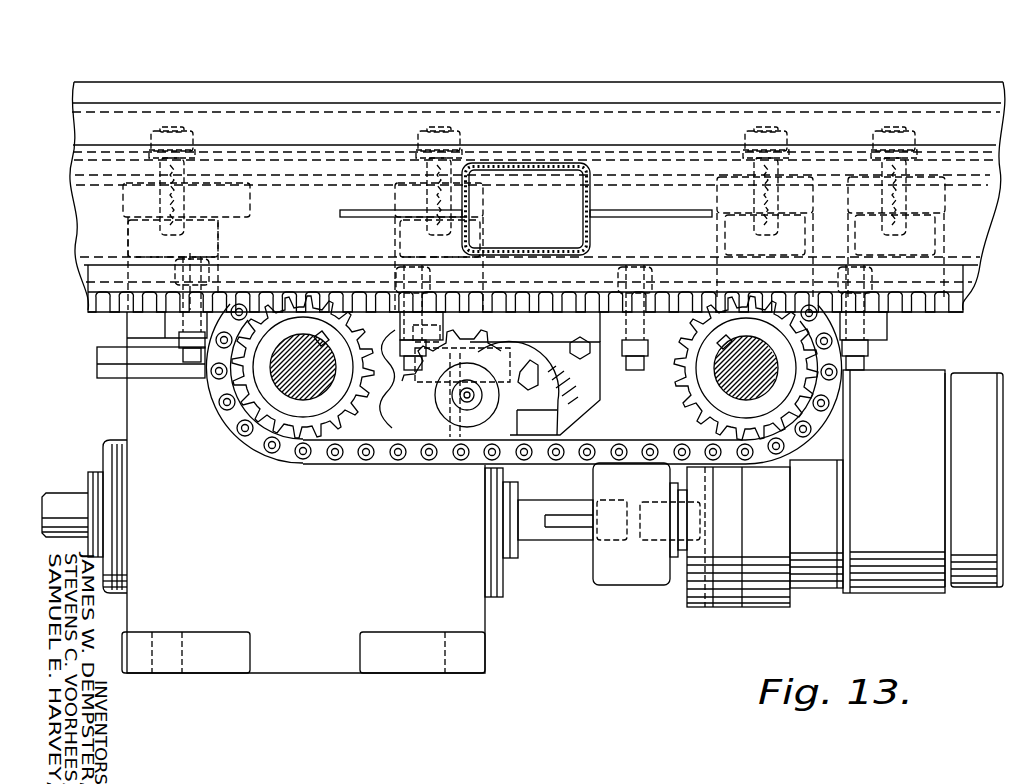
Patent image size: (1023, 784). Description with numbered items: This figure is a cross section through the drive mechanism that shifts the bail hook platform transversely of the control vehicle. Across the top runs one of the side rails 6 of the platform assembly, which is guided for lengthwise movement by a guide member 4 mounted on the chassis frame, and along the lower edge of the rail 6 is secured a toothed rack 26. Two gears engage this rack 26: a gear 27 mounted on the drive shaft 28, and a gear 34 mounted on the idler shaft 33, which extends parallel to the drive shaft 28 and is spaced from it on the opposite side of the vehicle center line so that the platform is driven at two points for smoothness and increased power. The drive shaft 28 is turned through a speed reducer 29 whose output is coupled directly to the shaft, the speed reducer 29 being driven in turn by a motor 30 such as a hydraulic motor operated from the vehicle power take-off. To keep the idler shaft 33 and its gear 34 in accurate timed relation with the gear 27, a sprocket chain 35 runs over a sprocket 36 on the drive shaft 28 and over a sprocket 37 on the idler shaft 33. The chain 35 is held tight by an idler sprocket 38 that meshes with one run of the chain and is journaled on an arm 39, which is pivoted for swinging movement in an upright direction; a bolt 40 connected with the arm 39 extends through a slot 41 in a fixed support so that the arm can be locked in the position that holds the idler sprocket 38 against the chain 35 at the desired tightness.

The guide member 4 is at (697, 83).
The side rail 6 is at (790, 122).
The rack 26 is at (935, 310).
The gear 27 is at (282, 413).
The drive shaft 28 is at (320, 393).
The speed reducer 29 is at (463, 618).
The motor 30 is at (893, 580).
The idler shaft 33 is at (773, 383).
The gear 34 is at (815, 435).
The sprocket chain 35 is at (440, 440).
The sprocket 36 is at (242, 412).
The sprocket 37 is at (820, 417).
The idler sprocket 38 is at (447, 437).
The arm 39 is at (548, 402).
The bolt 40 is at (463, 462).
The slot 41 is at (460, 340).